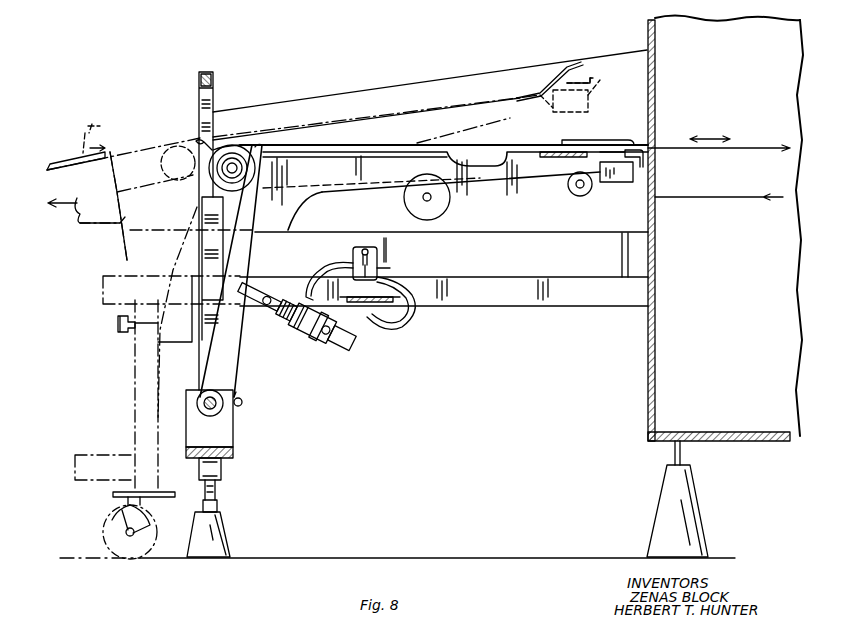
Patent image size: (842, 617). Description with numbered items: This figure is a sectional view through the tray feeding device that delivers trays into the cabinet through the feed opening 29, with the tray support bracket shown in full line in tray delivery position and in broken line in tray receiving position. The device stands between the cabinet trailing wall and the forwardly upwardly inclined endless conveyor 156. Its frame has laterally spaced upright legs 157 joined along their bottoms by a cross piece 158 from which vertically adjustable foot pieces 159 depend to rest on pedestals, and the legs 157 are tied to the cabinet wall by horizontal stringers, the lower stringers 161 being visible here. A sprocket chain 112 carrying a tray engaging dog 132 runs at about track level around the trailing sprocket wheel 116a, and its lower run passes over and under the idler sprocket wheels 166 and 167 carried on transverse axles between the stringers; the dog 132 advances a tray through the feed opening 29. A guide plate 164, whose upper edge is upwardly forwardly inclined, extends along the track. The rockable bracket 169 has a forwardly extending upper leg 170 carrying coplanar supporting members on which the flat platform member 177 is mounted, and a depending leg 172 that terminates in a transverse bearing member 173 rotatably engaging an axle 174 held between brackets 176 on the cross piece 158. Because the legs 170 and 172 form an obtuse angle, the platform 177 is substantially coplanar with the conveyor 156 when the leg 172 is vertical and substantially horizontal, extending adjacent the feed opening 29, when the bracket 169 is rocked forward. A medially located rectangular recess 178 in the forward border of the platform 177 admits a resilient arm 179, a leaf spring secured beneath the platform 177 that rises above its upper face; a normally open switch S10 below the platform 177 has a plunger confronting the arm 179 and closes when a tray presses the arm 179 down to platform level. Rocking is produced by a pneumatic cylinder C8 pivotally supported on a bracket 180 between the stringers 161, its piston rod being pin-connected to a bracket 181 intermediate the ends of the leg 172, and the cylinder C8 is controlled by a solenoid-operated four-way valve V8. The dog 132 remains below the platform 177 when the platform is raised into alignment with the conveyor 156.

The endless conveyor 156 is at (67, 147).
The tray engaging dog 132 is at (200, 143).
The trailing sprocket wheel 116a is at (232, 150).
The guide plate 164 is at (614, 62).
The normally open switch S10 is at (665, 172).
The flat platform member 177 is at (470, 153).
The rectangular recess 178 is at (582, 133).
The resilient arm 179 is at (605, 160).
The sprocket chain 112 is at (770, 134).
The feed opening 29 is at (660, 197).
The depending leg 172 is at (278, 235).
The rockable bracket 169 is at (327, 197).
The upper leg 170 is at (375, 195).
The idler sprocket wheel 166 is at (455, 195).
The idler sprocket wheel 167 is at (580, 196).
The lower horizontal stringer 161 is at (492, 310).
The upright leg 157 is at (222, 333).
The bearing member 173 is at (236, 400).
The axle 174 is at (204, 404).
The bracket 176 is at (225, 425).
The cross piece 158 is at (233, 452).
The vertically adjustable foot piece 159 is at (230, 468).
The bracket 181 is at (265, 280).
The solenoid-operated four-way valve V8 is at (378, 260).
The bracket 180 is at (345, 297).
The pneumatic cylinder C8 is at (335, 345).